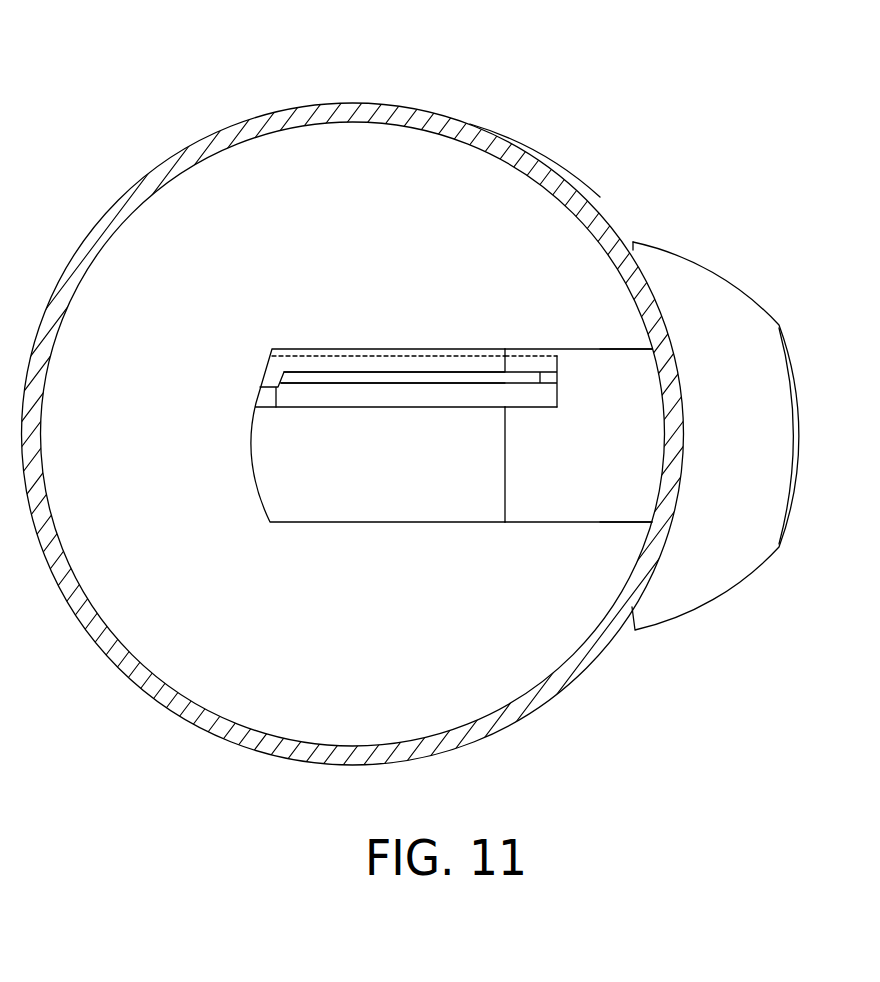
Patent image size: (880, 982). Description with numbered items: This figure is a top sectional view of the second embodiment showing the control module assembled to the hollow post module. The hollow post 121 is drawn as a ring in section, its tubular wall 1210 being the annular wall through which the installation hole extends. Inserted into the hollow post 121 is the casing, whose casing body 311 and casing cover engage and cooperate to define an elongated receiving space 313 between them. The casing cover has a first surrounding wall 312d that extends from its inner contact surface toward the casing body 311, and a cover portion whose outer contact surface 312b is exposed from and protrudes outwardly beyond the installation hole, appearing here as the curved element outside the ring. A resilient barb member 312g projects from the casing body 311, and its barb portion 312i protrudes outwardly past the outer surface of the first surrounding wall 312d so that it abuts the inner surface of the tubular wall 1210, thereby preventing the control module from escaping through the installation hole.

The hollow post 121 is at (377, 104).
The tubular wall 1210 is at (533, 157).
The casing body 311 is at (360, 497).
The receiving space 313 is at (368, 396).
The first surrounding wall 312d is at (553, 497).
The resilient barb member 312g is at (643, 347).
The barb portion 312i is at (642, 530).
The outer contact surface 312b is at (787, 347).